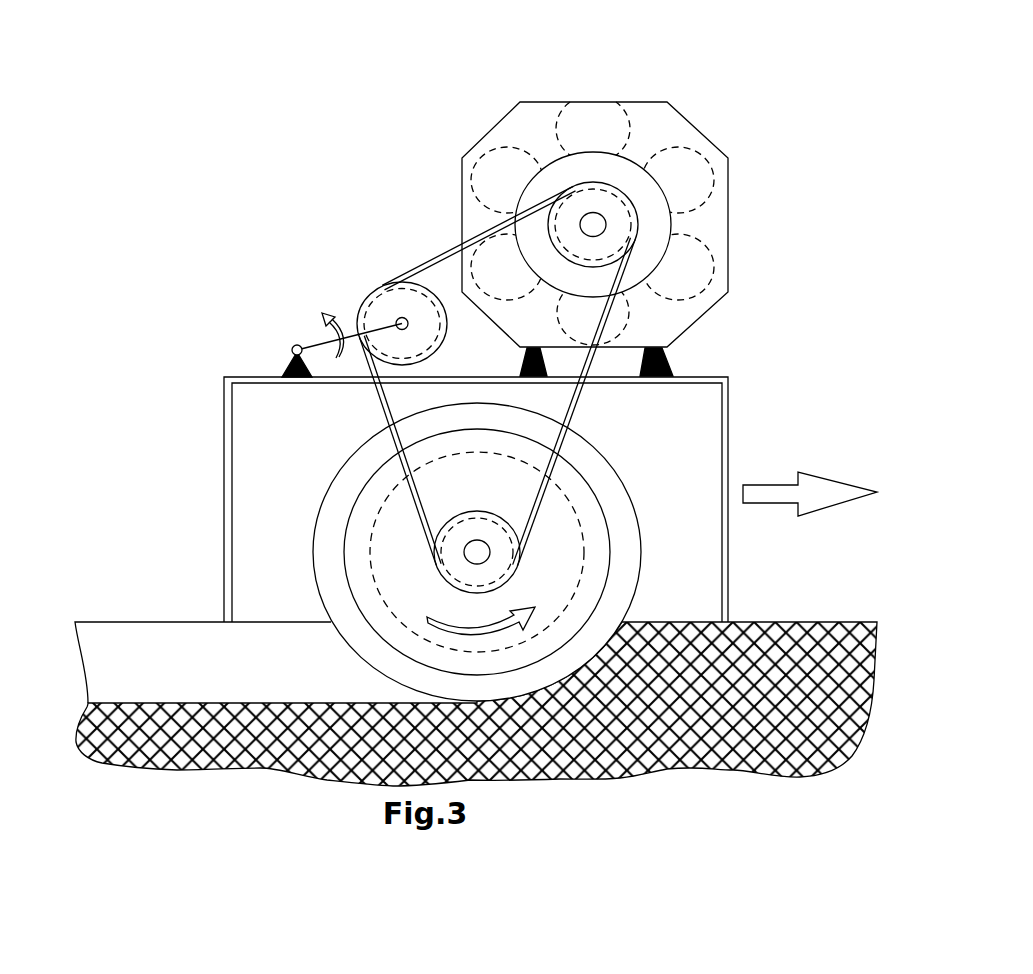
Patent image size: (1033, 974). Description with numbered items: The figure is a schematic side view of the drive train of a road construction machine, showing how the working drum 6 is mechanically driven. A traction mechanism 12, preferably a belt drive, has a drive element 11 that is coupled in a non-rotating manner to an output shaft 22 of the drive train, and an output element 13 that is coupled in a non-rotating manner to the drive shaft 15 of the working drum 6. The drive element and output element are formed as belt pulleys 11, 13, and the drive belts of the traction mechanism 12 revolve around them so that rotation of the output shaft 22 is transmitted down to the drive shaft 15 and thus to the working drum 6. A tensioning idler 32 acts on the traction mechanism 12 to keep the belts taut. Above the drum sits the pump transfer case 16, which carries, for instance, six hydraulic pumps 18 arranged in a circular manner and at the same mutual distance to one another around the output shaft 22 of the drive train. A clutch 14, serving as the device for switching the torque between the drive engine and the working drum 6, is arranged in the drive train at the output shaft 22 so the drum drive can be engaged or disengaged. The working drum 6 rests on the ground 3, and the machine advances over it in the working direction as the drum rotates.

The ground surface 3 is at (810, 619).
The working drum 6 is at (353, 542).
The drive element 11 is at (617, 235).
The traction mechanism 12 is at (392, 265).
The output element 13 is at (505, 558).
The clutch 14 is at (633, 157).
The drive shaft 15 is at (478, 552).
The pump transfer case 16 is at (630, 95).
The hydraulic pumps 18 is at (562, 107).
The output shaft 22 is at (597, 224).
The tensioning idler 32 is at (387, 302).